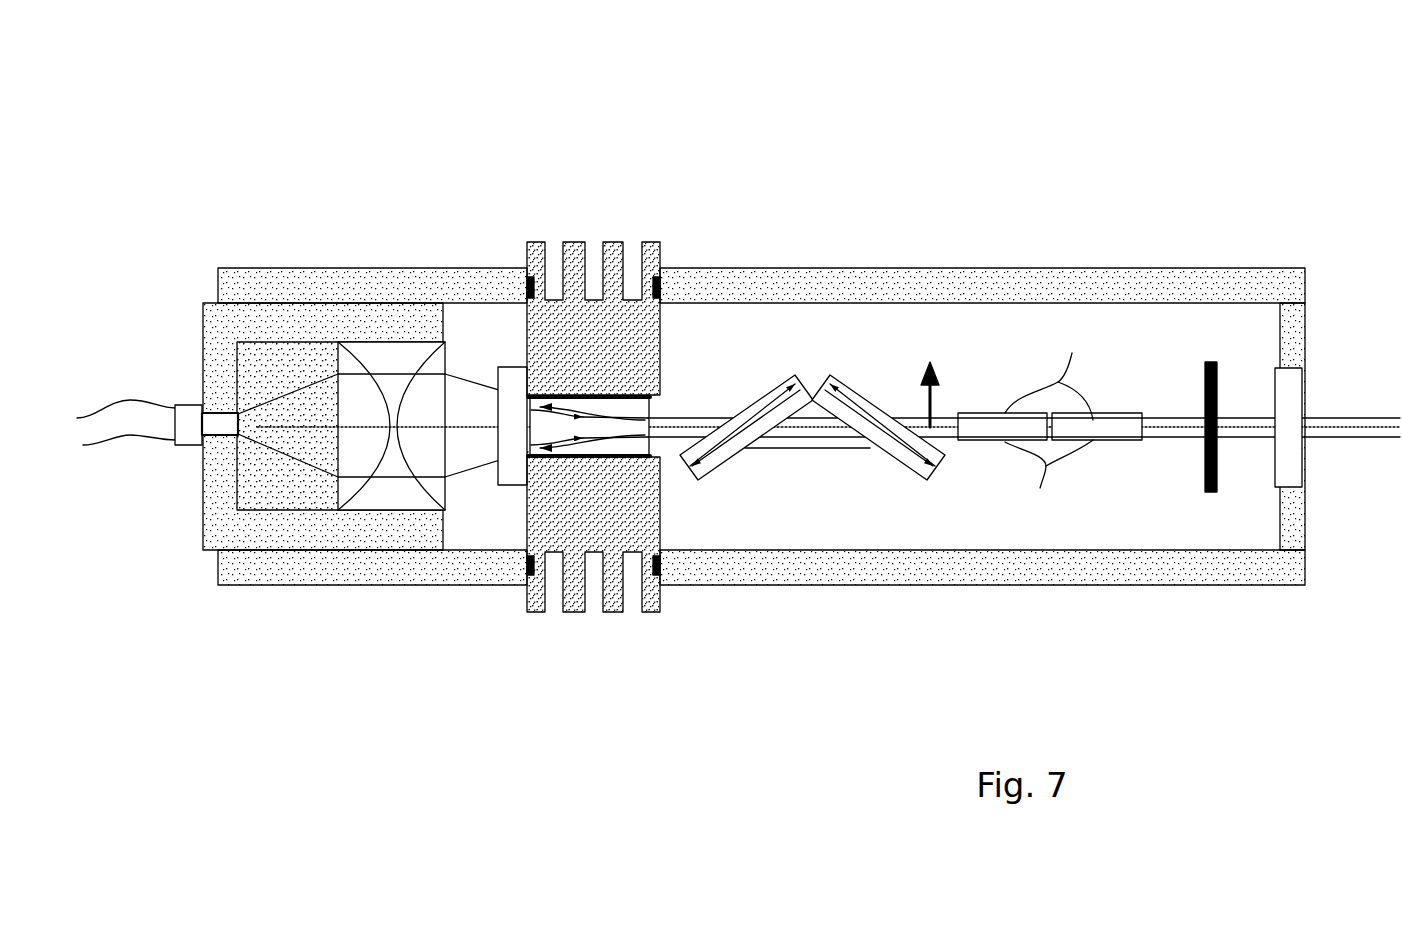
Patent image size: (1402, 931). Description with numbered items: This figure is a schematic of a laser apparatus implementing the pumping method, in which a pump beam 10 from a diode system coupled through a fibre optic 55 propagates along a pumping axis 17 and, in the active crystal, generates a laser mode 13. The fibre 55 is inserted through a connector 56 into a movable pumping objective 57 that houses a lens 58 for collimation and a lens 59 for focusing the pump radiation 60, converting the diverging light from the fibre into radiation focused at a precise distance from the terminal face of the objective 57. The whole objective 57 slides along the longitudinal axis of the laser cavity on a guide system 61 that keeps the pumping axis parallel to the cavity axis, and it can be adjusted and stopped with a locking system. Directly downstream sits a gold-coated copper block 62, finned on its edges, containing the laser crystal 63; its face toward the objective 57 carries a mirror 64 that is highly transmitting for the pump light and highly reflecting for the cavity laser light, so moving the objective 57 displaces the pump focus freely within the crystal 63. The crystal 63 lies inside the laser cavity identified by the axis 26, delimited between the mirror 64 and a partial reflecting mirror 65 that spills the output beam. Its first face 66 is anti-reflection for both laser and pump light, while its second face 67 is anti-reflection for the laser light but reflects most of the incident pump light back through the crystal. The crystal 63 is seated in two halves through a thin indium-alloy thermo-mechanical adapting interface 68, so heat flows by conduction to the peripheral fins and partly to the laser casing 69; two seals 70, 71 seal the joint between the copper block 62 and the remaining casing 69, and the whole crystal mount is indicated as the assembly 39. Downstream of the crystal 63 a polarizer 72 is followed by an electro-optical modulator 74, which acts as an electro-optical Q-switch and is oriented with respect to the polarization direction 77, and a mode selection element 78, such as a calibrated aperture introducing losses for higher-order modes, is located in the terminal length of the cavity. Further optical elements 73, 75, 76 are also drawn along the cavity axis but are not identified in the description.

The pump beam 10 is at (462, 400).
The laser mode 13 is at (1350, 440).
The pumping axis 17 is at (407, 423).
The cavity axis 26 is at (697, 413).
The assembly 39 is at (607, 630).
The fibre optic 55 is at (130, 398).
The connector 56 is at (225, 435).
The movable pumping objective 57 is at (262, 525).
The lens 58 is at (350, 363).
The lens 59 is at (435, 355).
The pump radiation 60 is at (468, 477).
The guide system 61 is at (360, 550).
The copper block 62 is at (553, 520).
The laser crystal 63 is at (607, 445).
The mirror 64 is at (513, 377).
The partial reflecting mirror 65 is at (1308, 393).
The first face 66 is at (535, 398).
The second face 67 is at (650, 400).
The thermo-mechanical adapting interface 68 is at (640, 460).
The laser casing 69 is at (783, 287).
The seal 70 is at (532, 277).
The seal 71 is at (658, 277).
The polarizer 72 is at (797, 478).
The second folding mirror 73 is at (913, 470).
The electro-optical modulator 74 is at (1032, 368).
The polarizer 75 is at (988, 440).
The Q-switch 76 is at (1120, 440).
The polarization direction 77 is at (927, 360).
The mode selection element 78 is at (1210, 358).